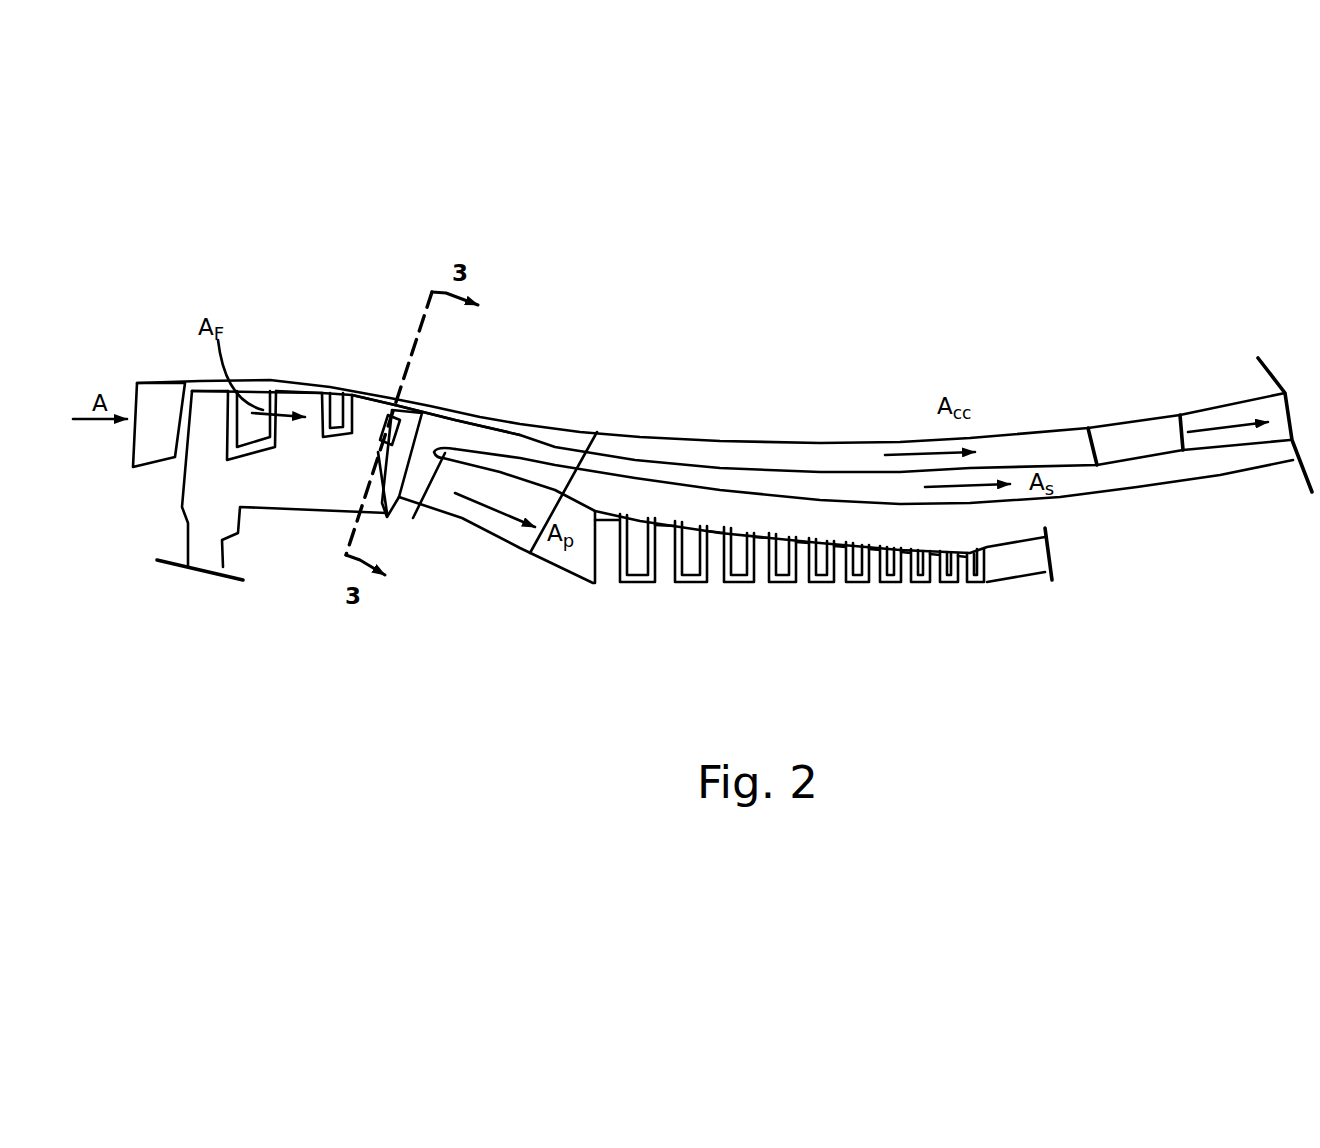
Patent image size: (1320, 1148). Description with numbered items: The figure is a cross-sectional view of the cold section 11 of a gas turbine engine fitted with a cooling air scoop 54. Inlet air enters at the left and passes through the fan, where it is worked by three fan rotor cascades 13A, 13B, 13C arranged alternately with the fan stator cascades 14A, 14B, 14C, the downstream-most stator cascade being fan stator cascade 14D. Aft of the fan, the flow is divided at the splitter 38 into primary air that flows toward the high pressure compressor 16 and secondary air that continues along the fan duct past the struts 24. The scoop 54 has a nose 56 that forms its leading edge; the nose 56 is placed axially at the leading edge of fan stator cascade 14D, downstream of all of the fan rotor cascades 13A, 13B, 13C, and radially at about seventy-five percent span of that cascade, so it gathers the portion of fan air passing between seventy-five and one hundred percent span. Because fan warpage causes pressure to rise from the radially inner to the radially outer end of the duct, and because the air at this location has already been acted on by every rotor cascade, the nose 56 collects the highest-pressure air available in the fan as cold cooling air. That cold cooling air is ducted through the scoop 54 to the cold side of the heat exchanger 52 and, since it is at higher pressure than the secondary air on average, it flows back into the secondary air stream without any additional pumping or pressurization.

The cold section 11 is at (978, 298).
The fan rotor cascade 13A is at (208, 435).
The fan rotor cascade 13B is at (302, 427).
The fan rotor cascade 13C is at (360, 433).
The fan stator cascade 14A is at (158, 397).
The fan stator cascade 14B is at (255, 383).
The fan stator cascade 14C is at (347, 388).
The fan stator cascade 14D is at (458, 420).
The high pressure compressor 16 is at (823, 595).
The struts 24 is at (557, 432).
The splitter 38 is at (404, 500).
The heat exchanger 52 is at (1137, 437).
The cooling air scoop 54 is at (493, 425).
The nose 56 is at (400, 400).